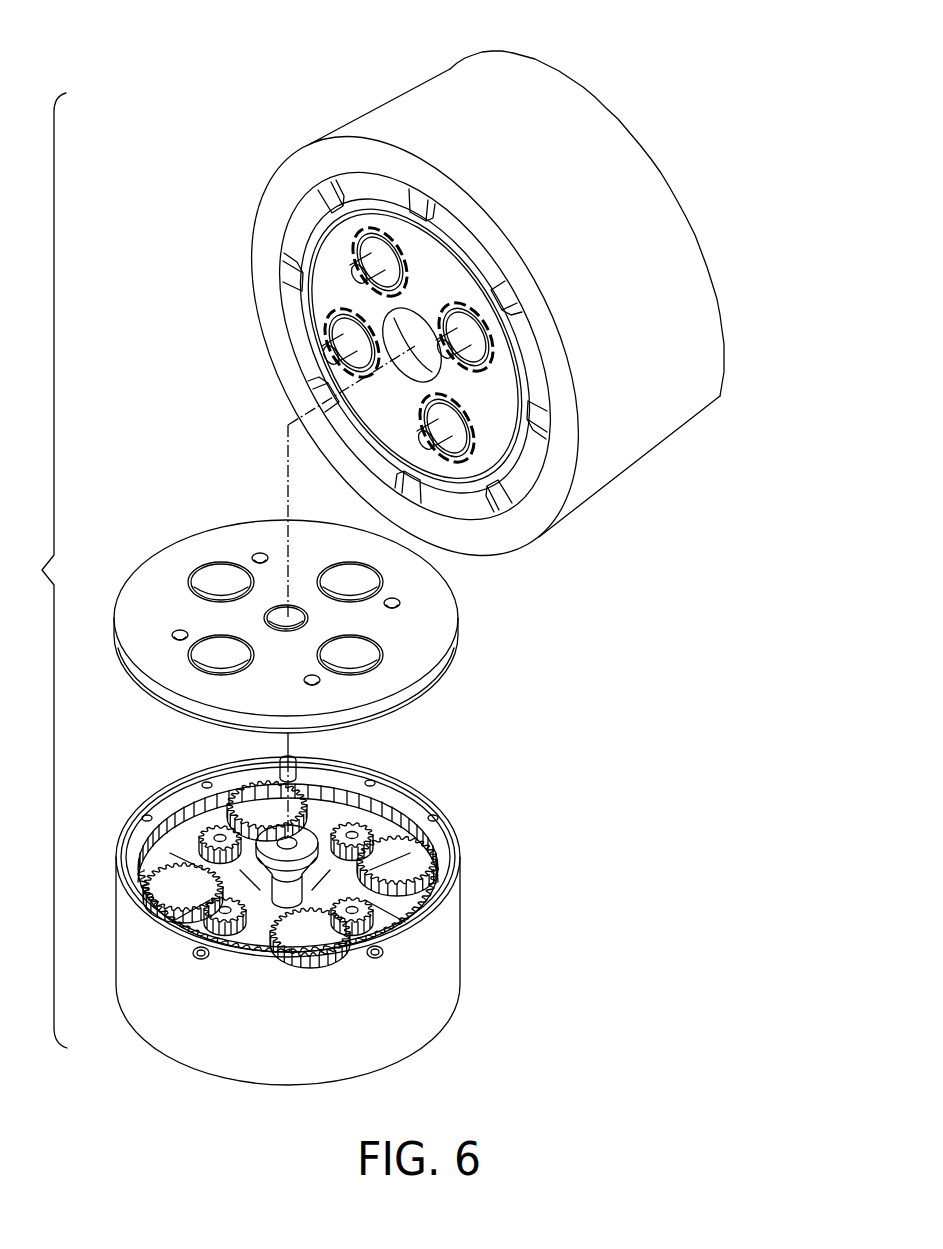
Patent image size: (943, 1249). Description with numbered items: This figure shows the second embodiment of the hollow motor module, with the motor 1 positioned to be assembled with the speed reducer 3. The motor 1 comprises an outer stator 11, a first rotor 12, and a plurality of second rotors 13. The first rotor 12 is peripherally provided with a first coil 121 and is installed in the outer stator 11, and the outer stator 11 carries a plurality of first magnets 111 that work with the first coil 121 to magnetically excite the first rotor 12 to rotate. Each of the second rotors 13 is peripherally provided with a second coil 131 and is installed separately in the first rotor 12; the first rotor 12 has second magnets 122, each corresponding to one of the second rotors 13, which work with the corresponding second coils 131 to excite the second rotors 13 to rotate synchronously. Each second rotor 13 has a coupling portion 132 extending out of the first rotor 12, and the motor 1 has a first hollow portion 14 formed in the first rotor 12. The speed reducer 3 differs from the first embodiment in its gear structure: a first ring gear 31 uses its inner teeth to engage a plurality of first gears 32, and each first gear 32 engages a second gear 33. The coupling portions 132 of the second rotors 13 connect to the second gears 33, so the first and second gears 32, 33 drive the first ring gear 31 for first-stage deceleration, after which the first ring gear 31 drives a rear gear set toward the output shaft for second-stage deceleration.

The motor 1 is at (656, 112).
The outer stator 11 is at (607, 482).
The first magnets 111 is at (318, 197).
The first rotor 12 is at (335, 240).
The first coil 121 is at (308, 294).
The second magnets 122 is at (335, 338).
The second rotors 13 is at (437, 408).
The second coil 131 is at (452, 405).
The coupling portion 132 is at (437, 438).
The first hollow portion 14 is at (415, 343).
The speed reducer 3 is at (447, 930).
The first ring gear 31 is at (432, 838).
The first gears 32 is at (408, 856).
The second gears 33 is at (395, 812).